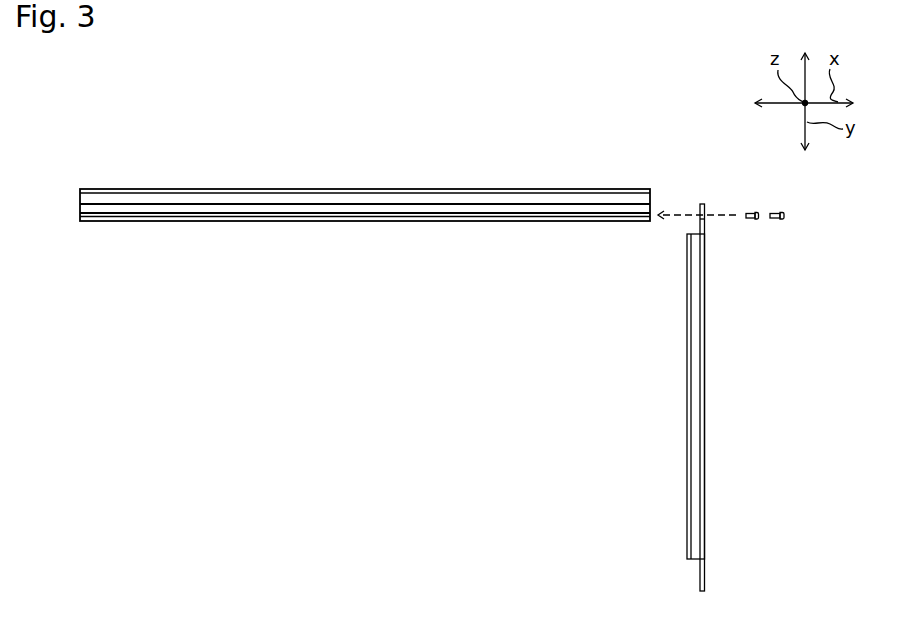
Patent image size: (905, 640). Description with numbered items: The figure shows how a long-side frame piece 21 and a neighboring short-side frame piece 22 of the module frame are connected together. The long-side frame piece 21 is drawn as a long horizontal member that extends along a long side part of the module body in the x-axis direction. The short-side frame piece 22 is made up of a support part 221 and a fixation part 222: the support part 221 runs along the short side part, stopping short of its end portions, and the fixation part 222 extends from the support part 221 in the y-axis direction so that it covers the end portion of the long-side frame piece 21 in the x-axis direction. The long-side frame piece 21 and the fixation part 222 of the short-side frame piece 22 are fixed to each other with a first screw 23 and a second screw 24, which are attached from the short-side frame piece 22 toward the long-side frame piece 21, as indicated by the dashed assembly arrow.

The long-side frame piece 21 is at (320, 222).
The short-side frame piece 22 is at (702, 400).
The support part 221 is at (706, 393).
The fixation part 222 is at (705, 579).
The first screw 23 is at (752, 210).
The second screw 24 is at (782, 213).